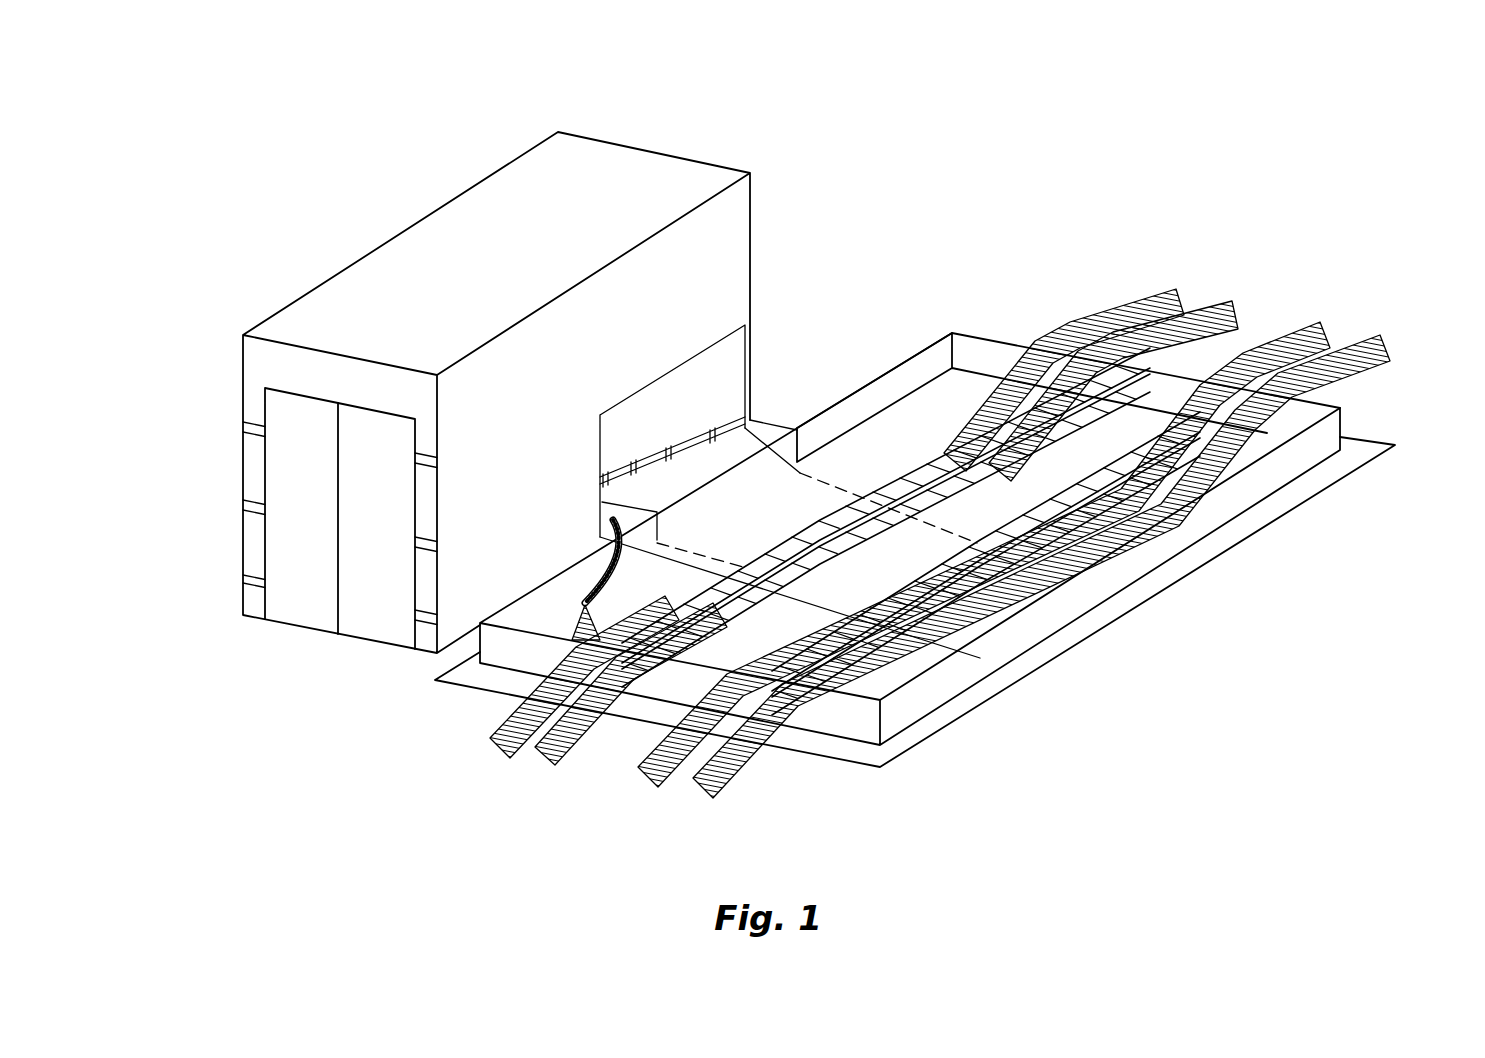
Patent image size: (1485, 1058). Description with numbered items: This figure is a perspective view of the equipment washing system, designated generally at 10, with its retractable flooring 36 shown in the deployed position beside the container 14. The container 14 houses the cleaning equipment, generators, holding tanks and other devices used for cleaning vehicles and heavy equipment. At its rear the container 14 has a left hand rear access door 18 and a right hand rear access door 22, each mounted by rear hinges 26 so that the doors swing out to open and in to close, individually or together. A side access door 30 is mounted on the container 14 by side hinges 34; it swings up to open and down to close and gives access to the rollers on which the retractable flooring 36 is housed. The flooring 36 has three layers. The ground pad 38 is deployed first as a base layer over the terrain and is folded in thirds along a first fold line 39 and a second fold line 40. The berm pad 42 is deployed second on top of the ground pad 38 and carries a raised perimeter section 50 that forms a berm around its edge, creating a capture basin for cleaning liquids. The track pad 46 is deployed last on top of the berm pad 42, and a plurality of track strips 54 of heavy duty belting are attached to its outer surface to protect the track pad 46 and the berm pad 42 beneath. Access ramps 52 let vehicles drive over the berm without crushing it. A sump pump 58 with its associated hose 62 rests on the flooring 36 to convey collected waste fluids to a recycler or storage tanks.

The container 10 is at (783, 237).
The container 14 is at (660, 152).
The left hand rear access door 18 is at (298, 592).
The right hand rear access door 22 is at (378, 618).
The rear hinges 26 is at (243, 420).
The side access door 30 is at (750, 352).
The side hinges 34 is at (630, 462).
The retractable flooring 36 is at (1100, 652).
The ground pad 38 is at (928, 755).
The first fold line 39 is at (700, 547).
The second fold line 40 is at (847, 487).
The berm pad 42 is at (848, 727).
The track pad 46 is at (960, 392).
The raised perimeter section 50 is at (1265, 488).
The access ramps 52 is at (1172, 300).
The track strips 54 is at (987, 540).
The sump pump 58 is at (578, 612).
The hose 62 is at (600, 523).